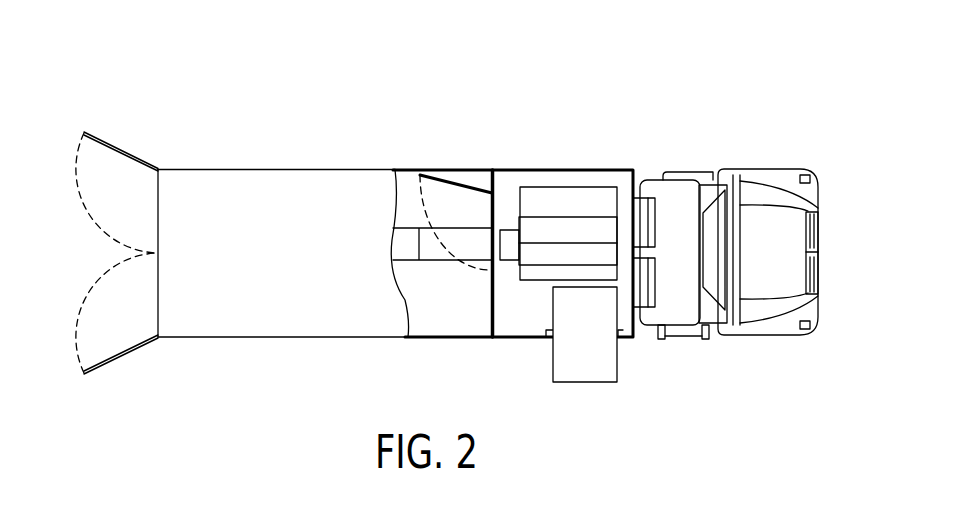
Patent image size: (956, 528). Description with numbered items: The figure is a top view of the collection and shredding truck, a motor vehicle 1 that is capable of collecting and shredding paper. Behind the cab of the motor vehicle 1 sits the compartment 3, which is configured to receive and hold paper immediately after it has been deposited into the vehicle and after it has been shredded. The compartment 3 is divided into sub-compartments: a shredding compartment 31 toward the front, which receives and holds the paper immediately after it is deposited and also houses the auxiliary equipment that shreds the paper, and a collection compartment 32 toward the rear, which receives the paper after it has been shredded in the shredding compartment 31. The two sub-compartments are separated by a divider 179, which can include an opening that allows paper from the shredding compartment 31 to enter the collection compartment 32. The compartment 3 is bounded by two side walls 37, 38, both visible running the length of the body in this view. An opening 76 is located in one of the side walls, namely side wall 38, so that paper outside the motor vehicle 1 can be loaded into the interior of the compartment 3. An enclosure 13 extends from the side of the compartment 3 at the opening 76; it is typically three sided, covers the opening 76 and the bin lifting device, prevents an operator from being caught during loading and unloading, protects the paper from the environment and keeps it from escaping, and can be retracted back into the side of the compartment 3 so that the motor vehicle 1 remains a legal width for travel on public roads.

The motor vehicle 1 is at (606, 112).
The compartment 3 is at (438, 160).
The enclosure 13 is at (580, 383).
The shredding compartment 31 is at (612, 183).
The collection compartment 32 is at (275, 187).
The side wall 37 is at (231, 169).
The side wall 38 is at (245, 338).
The opening 76 is at (587, 333).
The divider 179 is at (491, 288).